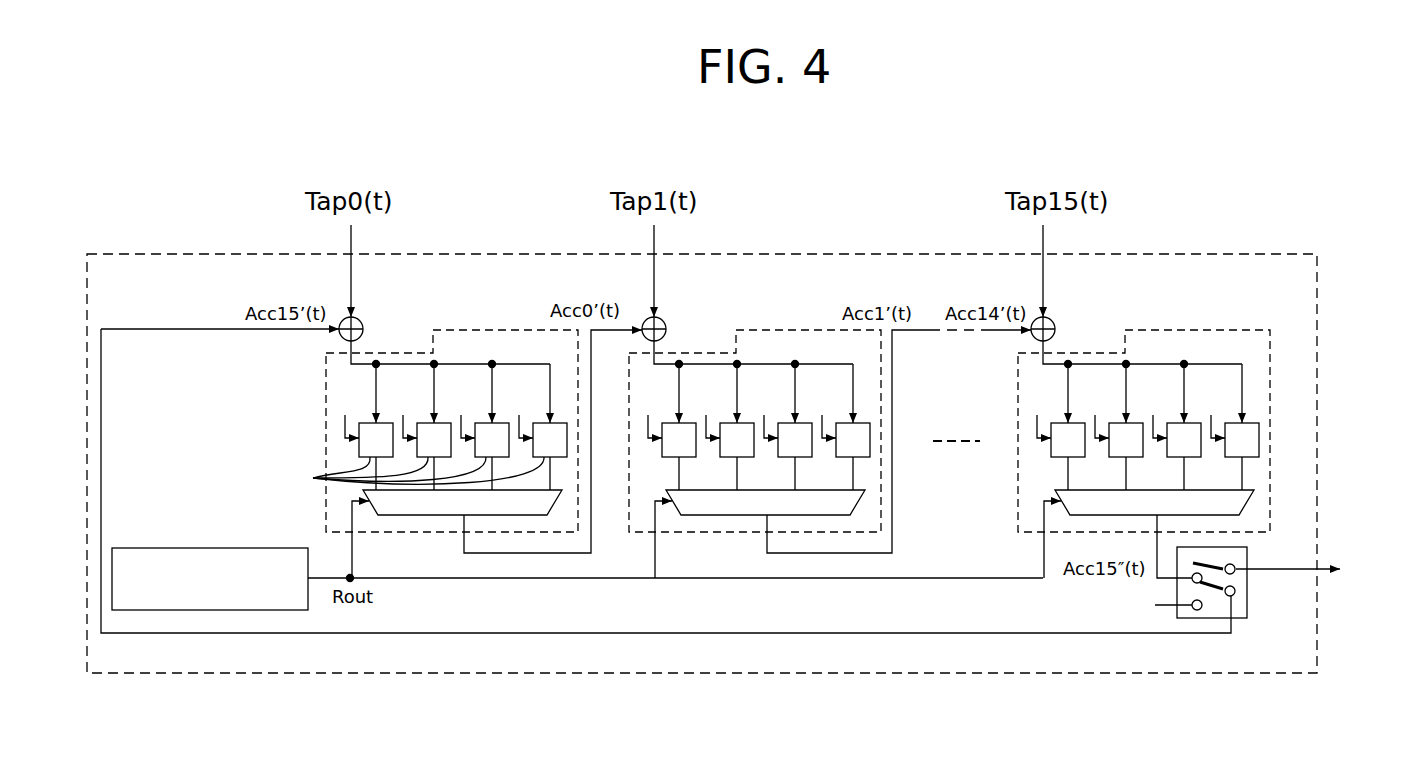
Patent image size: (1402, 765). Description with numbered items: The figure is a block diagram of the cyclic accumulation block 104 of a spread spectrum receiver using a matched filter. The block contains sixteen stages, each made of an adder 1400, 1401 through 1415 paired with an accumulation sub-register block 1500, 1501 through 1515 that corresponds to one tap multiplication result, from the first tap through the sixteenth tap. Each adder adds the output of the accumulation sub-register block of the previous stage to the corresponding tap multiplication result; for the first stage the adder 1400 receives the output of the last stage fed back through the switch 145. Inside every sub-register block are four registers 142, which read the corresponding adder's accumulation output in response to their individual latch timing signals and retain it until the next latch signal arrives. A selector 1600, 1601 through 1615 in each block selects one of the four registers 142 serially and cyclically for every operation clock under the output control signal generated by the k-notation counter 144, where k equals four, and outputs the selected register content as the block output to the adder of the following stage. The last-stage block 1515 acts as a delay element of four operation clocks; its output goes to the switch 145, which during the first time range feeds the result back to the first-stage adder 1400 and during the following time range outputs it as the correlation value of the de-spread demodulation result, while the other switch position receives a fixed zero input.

The cyclic accumulation block 104 is at (1215, 254).
The register 142 is at (401, 476).
The k-notation counter 144 is at (148, 548).
The switch 145 is at (1247, 618).
The adder 1400 is at (363, 320).
The adder 1401 is at (707, 304).
The adder 1415 is at (1104, 304).
The accumulation sub-register block 1500 is at (318, 410).
The accumulation sub-register block 1501 is at (755, 453).
The accumulation sub-register block 1515 is at (1093, 453).
The selector 1600 is at (412, 515).
The selector 1601 is at (819, 534).
The selector 1615 is at (1221, 533).